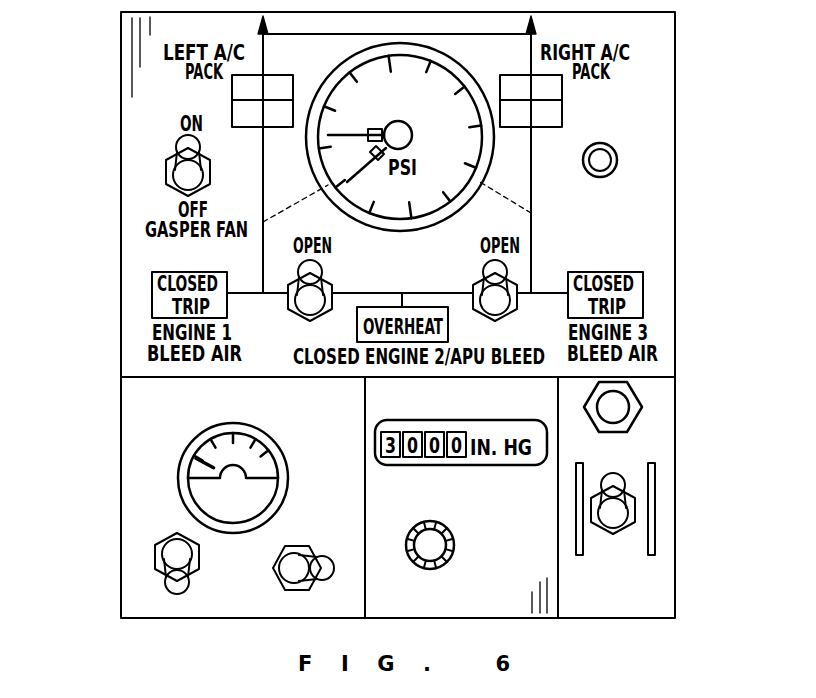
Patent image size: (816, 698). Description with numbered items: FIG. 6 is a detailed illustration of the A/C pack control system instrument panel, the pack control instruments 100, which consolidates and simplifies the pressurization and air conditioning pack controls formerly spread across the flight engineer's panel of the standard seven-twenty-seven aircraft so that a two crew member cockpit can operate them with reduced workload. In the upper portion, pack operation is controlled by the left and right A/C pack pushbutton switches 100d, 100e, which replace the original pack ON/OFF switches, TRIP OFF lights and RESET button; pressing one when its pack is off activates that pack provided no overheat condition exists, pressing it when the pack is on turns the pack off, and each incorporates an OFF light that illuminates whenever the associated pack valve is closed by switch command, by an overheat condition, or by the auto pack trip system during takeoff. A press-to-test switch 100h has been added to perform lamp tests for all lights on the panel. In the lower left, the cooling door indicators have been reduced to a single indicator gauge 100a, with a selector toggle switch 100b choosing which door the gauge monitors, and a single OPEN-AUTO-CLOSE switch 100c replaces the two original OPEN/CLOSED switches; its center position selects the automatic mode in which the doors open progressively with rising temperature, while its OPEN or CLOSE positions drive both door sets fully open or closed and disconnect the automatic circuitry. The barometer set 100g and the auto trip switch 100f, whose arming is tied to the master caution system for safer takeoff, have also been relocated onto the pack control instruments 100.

The pack control instruments 100 is at (676, 25).
The cooling door indicator 100a is at (148, 432).
The selector toggle switch 100b is at (276, 580).
The OPEN-AUTO-CLOSE switch 100c is at (147, 553).
The left A/C pack pushbutton switch 100d is at (230, 98).
The right A/C pack pushbutton switch 100e is at (571, 107).
The auto trip switch 100f is at (660, 510).
The barometer set 100g is at (445, 566).
The lamp test switch 100h is at (626, 157).